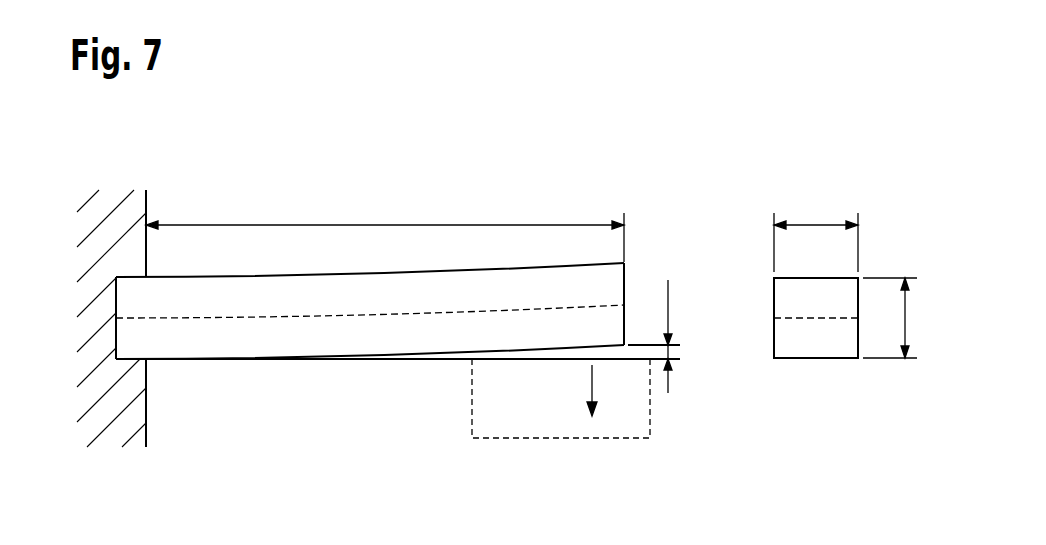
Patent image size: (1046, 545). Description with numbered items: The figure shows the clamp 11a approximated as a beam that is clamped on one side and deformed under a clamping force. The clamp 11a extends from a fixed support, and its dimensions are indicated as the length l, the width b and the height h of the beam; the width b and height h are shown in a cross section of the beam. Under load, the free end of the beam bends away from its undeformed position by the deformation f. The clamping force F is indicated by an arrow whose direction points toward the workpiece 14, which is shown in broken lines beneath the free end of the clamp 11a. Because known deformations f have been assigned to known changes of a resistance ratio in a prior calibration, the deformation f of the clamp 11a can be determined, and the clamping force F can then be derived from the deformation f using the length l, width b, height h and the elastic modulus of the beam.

The clamp 11a is at (225, 343).
The workpiece 14 is at (493, 420).
The length l is at (385, 227).
The width b is at (816, 233).
The height h is at (897, 318).
The deformation f is at (675, 336).
The clamping force F is at (583, 390).